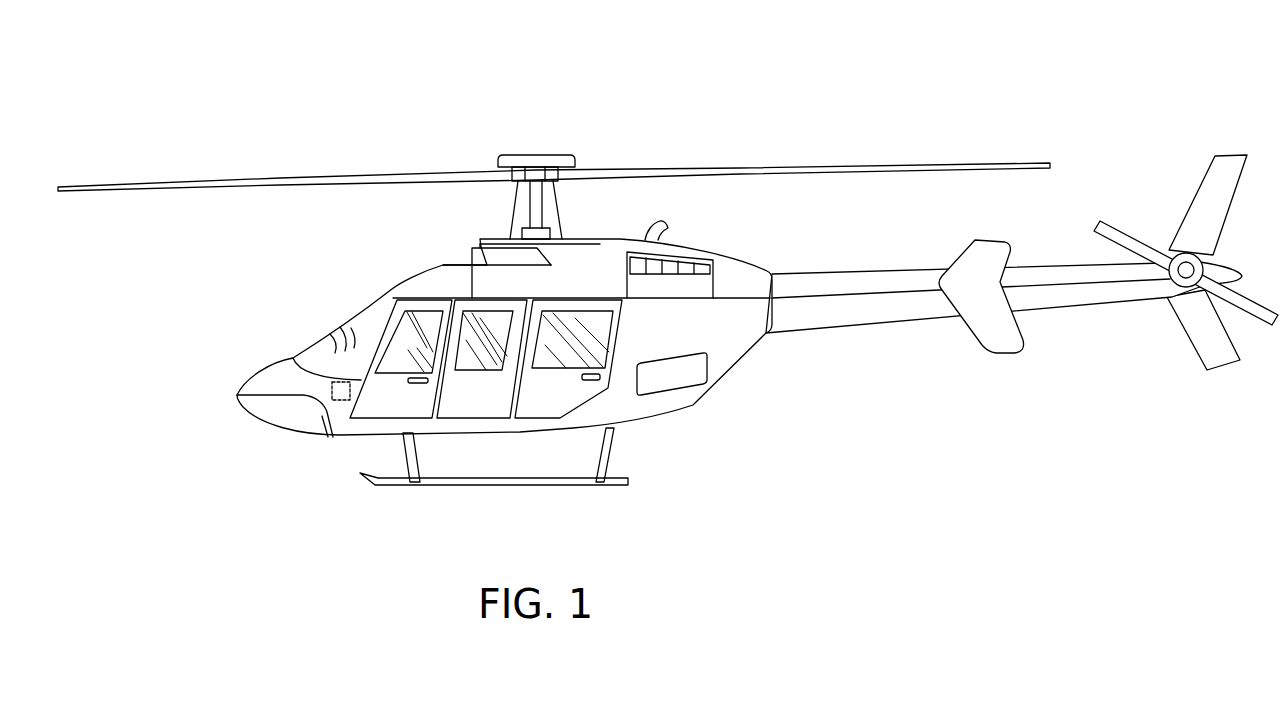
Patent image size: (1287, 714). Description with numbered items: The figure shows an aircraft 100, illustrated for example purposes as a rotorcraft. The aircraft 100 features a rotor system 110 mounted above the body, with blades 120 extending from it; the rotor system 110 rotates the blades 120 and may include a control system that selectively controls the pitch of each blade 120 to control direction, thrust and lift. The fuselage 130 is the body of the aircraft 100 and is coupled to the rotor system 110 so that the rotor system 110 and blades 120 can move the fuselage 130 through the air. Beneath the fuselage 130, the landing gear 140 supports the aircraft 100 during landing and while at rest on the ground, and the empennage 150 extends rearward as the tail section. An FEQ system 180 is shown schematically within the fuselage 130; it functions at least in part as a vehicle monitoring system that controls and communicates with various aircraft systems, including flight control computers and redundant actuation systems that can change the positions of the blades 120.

The aircraft 100 is at (668, 283).
The rotor system 110 is at (535, 156).
The blades 120 is at (773, 167).
The fuselage 130 is at (290, 431).
The landing gear 140 is at (504, 487).
The empennage 150 is at (873, 323).
The FEQ system 180 is at (332, 400).